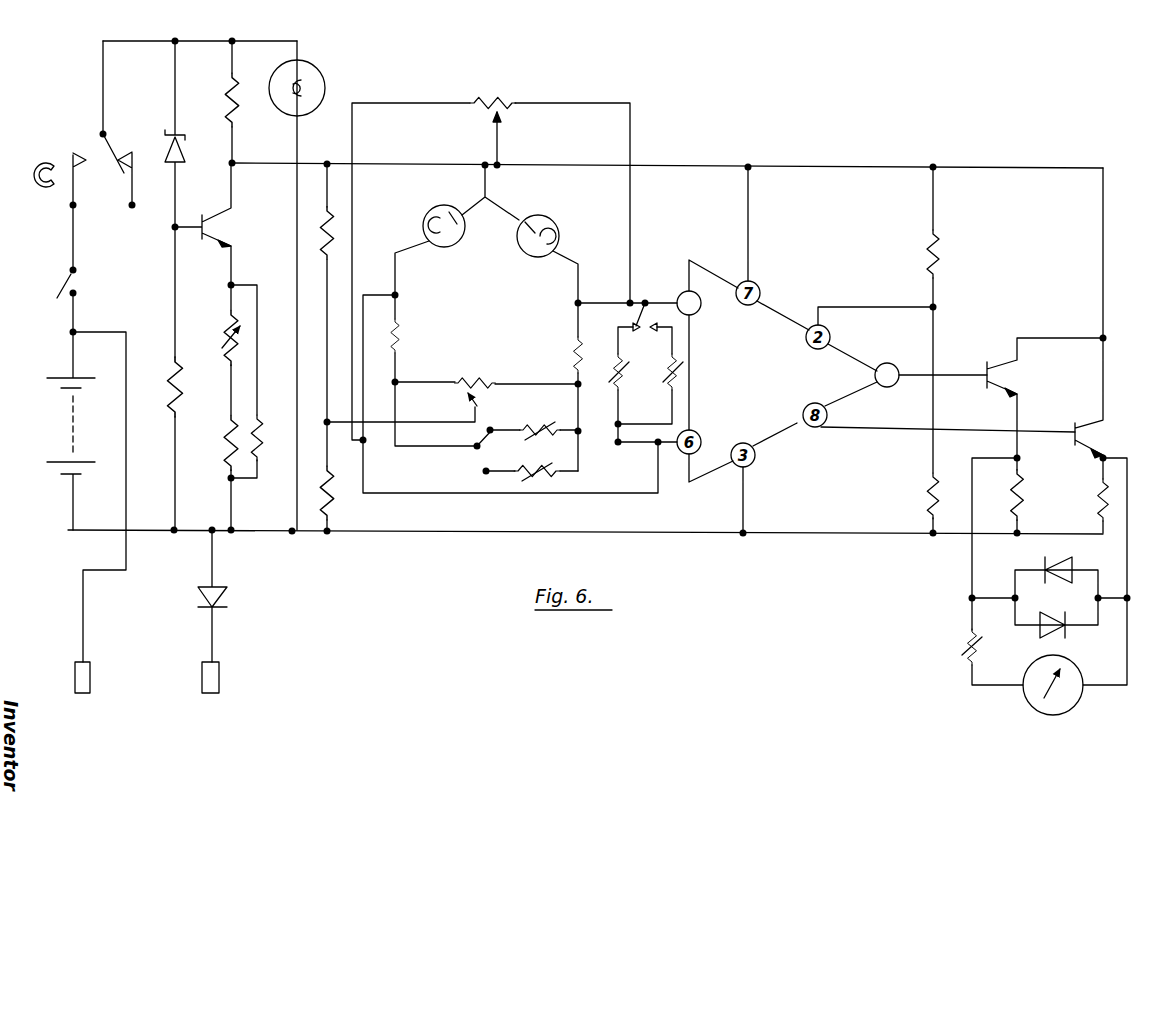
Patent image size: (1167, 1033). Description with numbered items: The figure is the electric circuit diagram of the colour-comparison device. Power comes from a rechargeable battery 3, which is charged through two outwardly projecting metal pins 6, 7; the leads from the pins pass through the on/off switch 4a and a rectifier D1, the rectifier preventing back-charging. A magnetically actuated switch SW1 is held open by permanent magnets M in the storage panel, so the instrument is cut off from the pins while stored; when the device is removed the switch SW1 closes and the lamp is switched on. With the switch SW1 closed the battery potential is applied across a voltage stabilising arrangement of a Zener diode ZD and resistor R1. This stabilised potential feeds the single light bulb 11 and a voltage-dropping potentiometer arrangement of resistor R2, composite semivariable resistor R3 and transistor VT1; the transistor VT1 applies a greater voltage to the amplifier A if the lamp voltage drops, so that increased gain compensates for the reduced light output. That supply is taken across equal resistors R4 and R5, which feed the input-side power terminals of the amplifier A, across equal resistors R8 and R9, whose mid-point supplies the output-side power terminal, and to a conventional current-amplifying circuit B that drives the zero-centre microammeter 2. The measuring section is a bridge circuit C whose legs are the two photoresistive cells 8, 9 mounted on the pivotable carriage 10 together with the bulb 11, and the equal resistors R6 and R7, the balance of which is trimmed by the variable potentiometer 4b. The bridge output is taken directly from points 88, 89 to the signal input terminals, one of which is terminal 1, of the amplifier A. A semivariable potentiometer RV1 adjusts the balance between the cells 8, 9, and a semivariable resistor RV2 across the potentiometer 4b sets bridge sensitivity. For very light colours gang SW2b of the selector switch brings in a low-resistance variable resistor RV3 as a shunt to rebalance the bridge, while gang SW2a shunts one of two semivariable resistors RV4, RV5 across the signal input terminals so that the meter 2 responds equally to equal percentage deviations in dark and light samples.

The permanent magnet M is at (49, 158).
The magnetically actuated switch SW1 is at (109, 140).
The Zener diode ZD is at (182, 136).
The resistor R2 is at (226, 92).
The electric light bulb 11 is at (269, 90).
The transistor VT1 is at (203, 224).
The on/off switch 4a is at (110, 294).
The rechargeable battery 3 is at (78, 437).
The resistor R1 is at (168, 387).
The composite semivariable resistor R3 is at (247, 413).
The resistor R4 is at (340, 233).
The resistor R5 is at (339, 476).
The semivariable potentiometer RV1 is at (481, 110).
The photosensitive cell 9 is at (450, 203).
The photosensitive cell 8 is at (543, 212).
The bridge circuit C is at (550, 283).
The bridge output point 88 is at (400, 296).
The bridge output point 89 is at (626, 292).
The resistor R6 is at (402, 337).
The variable potentiometer 4b is at (483, 373).
The resistor R7 is at (572, 343).
The semivariable resistor RV2 is at (534, 417).
The low resistance variable resistor RV3 is at (531, 460).
The gang b of switch SW2 SW2b is at (474, 452).
The gang a of switch SW2 SW2a is at (655, 302).
The semivariable resistor RV4 is at (643, 386).
The semivariable resistor RV5 is at (682, 376).
The signal input terminal 1 is at (689, 303).
The pivotally movable carriage 10 is at (887, 375).
The amplifier A is at (748, 398).
The resistor R8 is at (940, 253).
The resistor R9 is at (925, 492).
The current-amplifying circuit B is at (1031, 498).
The zero-centre microammeter 2 is at (1074, 668).
The rectifier D1 is at (197, 595).
The metal pin 7 is at (90, 678).
The metal pin 6 is at (201, 678).